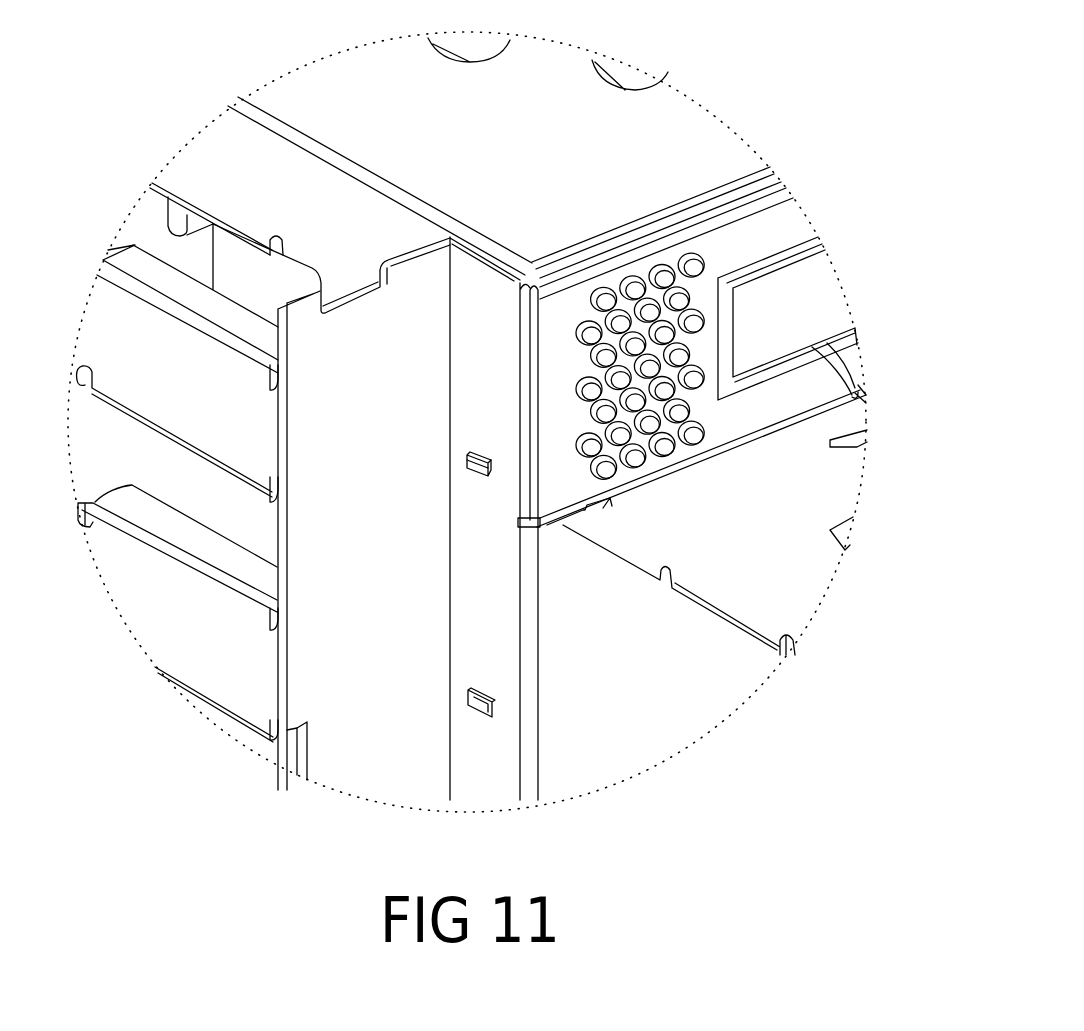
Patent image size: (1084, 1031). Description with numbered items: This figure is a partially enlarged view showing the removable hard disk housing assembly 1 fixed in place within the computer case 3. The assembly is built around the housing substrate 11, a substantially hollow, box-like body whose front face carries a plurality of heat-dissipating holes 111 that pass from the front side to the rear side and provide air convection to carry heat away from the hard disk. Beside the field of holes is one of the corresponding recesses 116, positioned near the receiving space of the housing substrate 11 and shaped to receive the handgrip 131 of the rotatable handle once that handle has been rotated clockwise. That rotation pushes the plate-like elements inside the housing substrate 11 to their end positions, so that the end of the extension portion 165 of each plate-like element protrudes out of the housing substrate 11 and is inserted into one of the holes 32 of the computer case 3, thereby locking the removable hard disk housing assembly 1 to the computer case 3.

The removable hard disk housing assembly 1 is at (795, 563).
The computer case 3 is at (238, 728).
The housing substrate 11 is at (742, 344).
The heat-dissipating holes 111 is at (663, 275).
The handgrip 131 is at (810, 292).
The corresponding recesses 116 is at (778, 367).
The holes 32 is at (482, 457).
The extension portion 165 is at (468, 470).